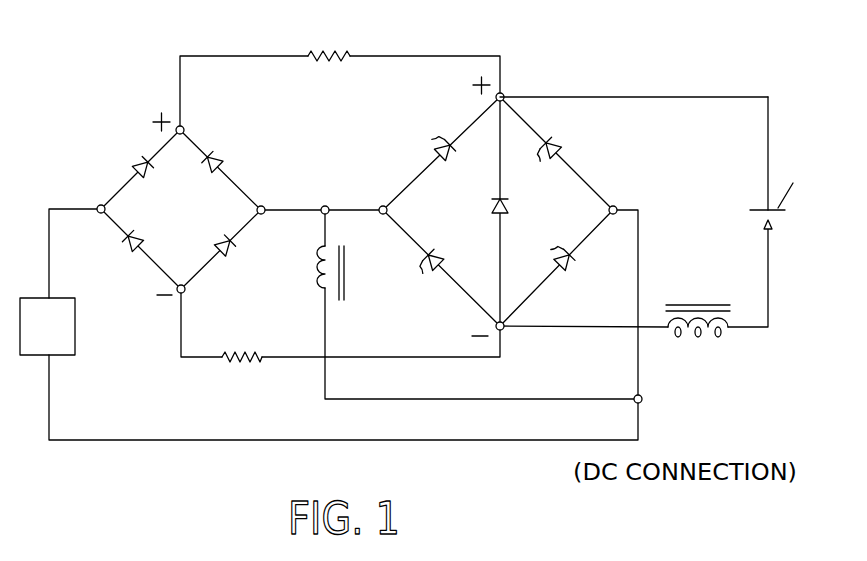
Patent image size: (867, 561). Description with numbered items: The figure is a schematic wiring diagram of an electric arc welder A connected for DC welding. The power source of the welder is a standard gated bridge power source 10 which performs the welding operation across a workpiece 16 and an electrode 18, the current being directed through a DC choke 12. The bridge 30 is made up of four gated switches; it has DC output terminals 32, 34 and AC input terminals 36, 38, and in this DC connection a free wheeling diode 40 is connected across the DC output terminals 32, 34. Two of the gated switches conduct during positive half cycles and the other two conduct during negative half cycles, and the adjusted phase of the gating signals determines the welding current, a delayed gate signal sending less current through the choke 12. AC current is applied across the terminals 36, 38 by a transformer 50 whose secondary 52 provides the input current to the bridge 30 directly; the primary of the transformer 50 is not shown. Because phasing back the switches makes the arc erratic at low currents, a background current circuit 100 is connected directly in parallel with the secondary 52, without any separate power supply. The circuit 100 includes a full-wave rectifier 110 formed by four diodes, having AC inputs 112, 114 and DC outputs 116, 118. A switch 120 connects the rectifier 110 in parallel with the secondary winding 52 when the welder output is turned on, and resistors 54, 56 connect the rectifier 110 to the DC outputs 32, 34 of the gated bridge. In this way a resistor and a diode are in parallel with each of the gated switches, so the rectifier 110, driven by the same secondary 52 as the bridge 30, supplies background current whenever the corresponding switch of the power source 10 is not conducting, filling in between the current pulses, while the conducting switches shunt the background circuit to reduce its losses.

The gated bridge power source 10 is at (509, 211).
The DC choke 12 is at (693, 300).
The workpiece 16 is at (783, 200).
The electrode 18 is at (775, 228).
The bridge 30 is at (562, 116).
The DC output terminal 32 is at (505, 92).
The DC output terminal 34 is at (504, 330).
The AC input terminal 36 is at (381, 205).
The AC input terminal 38 is at (617, 206).
The free wheeling diode 40 is at (508, 203).
The transformer 50 is at (319, 300).
The secondary 52 is at (318, 277).
The resistor 54 is at (325, 55).
The resistor 56 is at (238, 362).
The background current circuit 100 is at (146, 192).
The full-wave rectifier 110 is at (144, 276).
The AC input 112 is at (266, 205).
The AC input 114 is at (95, 205).
The DC output 116 is at (184, 127).
The DC output 118 is at (185, 291).
The switch 120 is at (79, 365).
The electric arc welder A is at (605, 62).